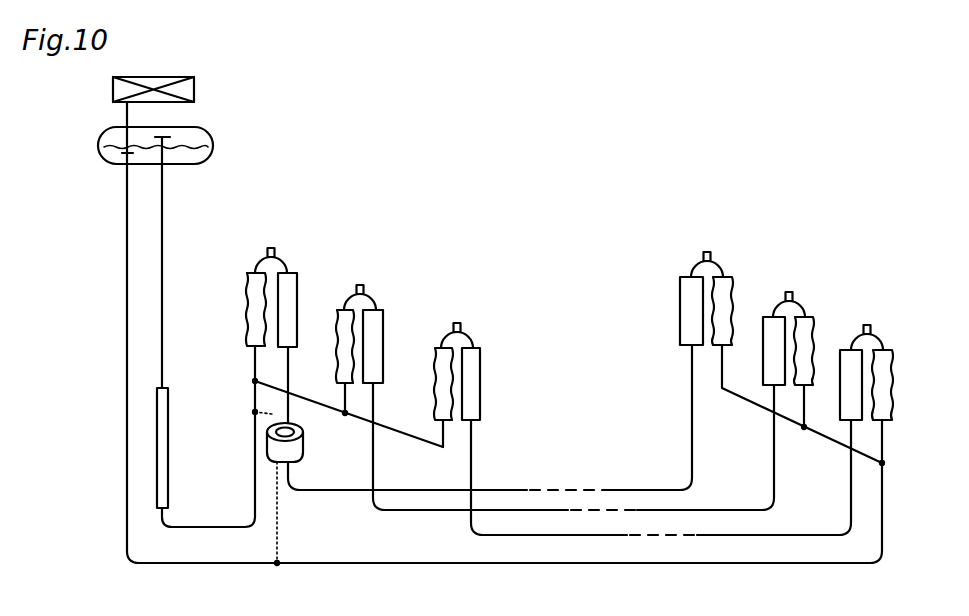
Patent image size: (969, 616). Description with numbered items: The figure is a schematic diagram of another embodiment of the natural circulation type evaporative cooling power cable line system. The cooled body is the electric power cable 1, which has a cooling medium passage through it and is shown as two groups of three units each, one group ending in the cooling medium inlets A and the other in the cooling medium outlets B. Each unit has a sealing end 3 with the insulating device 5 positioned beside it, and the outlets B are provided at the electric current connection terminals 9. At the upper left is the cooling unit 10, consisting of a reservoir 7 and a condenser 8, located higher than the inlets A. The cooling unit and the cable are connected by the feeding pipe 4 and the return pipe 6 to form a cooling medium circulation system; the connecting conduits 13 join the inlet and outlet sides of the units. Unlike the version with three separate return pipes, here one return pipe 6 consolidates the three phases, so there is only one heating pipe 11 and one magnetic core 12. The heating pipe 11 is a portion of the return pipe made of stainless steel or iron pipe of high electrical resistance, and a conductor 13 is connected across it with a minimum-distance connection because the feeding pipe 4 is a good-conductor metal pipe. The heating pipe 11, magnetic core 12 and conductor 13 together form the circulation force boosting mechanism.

The electric power cable 1 is at (510, 535).
The sealing end 3 is at (299, 289).
The feeding pipe 4 is at (445, 565).
The insulating device 5 is at (247, 288).
The return pipe 6 is at (162, 298).
The reservoir 7 is at (231, 118).
The condenser 8 is at (194, 89).
The electric current connection terminal 9 is at (271, 247).
The cooling unit 10 is at (257, 68).
The heating pipe 11 is at (168, 430).
The magnetic core 12 is at (303, 450).
The conductor 13 is at (278, 514).
The cooling medium inlet A is at (716, 262).
The cooling medium outlet B is at (282, 258).